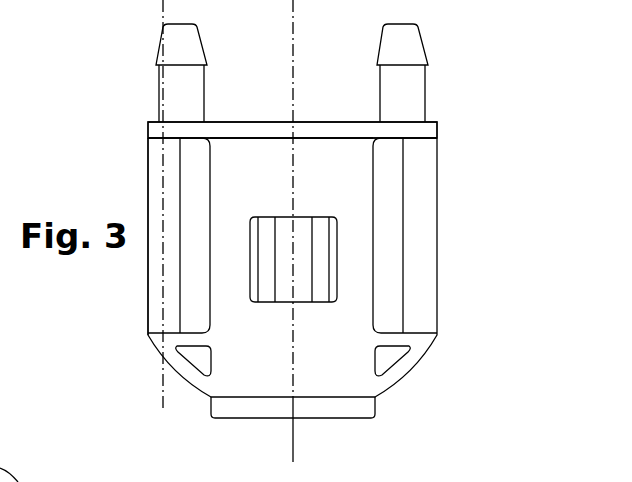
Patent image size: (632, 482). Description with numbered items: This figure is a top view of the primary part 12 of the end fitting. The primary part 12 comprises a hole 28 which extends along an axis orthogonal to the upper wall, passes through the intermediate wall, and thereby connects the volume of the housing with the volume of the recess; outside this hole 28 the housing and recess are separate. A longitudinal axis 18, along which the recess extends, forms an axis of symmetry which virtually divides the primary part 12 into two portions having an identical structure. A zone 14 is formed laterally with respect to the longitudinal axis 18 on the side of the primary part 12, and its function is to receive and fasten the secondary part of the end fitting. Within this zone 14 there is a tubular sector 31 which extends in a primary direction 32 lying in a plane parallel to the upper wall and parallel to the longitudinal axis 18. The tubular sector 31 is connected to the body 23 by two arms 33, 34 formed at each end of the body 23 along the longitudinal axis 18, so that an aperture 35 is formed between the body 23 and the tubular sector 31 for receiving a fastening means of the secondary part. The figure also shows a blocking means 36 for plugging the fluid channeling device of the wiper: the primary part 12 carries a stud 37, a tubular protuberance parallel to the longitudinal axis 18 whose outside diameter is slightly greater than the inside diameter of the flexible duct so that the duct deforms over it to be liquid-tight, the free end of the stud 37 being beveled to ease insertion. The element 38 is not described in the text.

The primary part 12 is at (471, 161).
The zone 14 is at (138, 278).
The longitudinal axis 18 is at (293, 440).
The body 23 is at (320, 157).
The hole 28 is at (302, 267).
The tubular sector 31 is at (157, 208).
The primary direction 32 is at (163, 392).
The arm 33 is at (178, 128).
The arm 34 is at (192, 380).
The aperture 35 is at (192, 177).
The blocking means 36 is at (151, 78).
The stud 37 is at (185, 43).
The adjacent element 38 is at (68, 478).